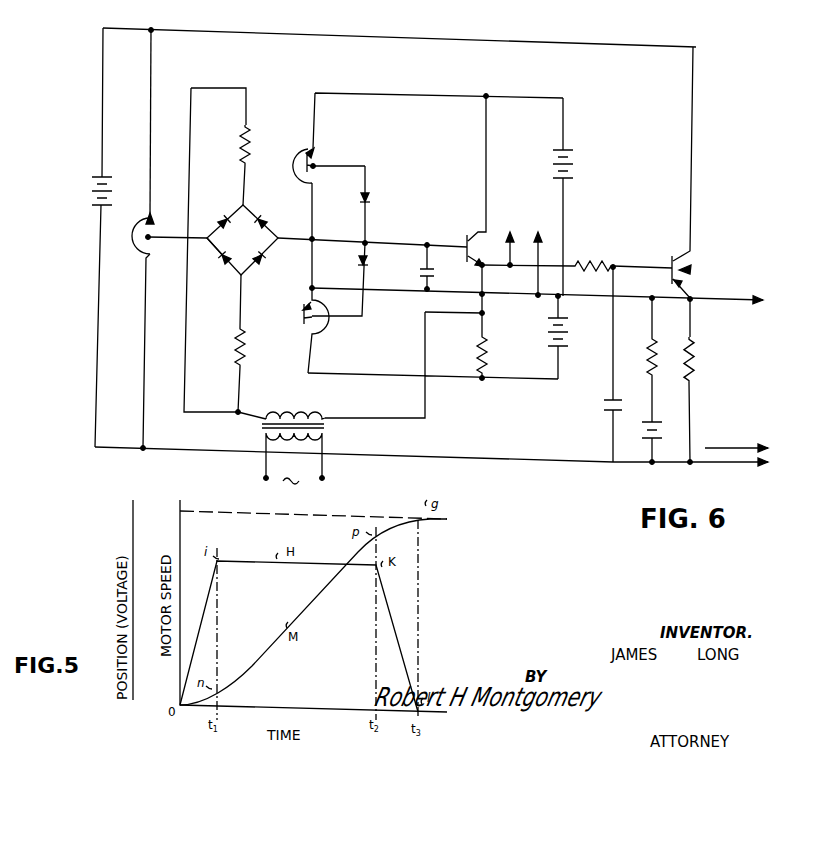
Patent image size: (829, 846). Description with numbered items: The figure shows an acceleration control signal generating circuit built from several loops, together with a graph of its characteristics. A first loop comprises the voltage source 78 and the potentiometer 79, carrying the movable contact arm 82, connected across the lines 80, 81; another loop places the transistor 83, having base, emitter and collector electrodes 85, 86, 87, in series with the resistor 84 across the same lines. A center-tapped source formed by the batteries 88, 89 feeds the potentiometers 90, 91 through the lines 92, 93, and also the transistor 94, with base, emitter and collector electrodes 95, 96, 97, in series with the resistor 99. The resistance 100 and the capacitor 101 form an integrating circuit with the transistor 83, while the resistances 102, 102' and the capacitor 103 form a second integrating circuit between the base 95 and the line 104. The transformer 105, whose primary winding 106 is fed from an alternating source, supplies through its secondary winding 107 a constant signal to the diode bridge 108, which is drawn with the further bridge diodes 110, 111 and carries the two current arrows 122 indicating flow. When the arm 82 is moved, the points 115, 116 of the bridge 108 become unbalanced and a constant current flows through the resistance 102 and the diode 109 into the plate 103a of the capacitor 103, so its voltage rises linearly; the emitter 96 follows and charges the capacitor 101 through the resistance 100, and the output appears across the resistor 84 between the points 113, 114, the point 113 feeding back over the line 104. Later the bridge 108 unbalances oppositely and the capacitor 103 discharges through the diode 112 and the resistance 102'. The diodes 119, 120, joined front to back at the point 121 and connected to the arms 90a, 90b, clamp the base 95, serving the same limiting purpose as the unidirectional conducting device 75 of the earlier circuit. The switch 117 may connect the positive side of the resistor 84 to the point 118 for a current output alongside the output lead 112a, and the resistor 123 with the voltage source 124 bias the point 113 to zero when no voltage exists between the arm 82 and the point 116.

The unidirectional conducting device 75 is at (584, 0).
The voltage source 78 is at (100, 178).
The potentiometer 79 is at (134, 255).
The line 80 is at (225, 27).
The line 81 is at (110, 445).
The movable contact arm 82 is at (150, 221).
The transistor 83 is at (692, 268).
The resistor 84 is at (695, 365).
The base electrode 85 is at (666, 263).
The emitter electrode 86 is at (690, 292).
The collector electrode 87 is at (686, 248).
The battery 88 is at (572, 154).
The battery 89 is at (568, 322).
The potentiometer 90 is at (296, 164).
The contact arm 90a is at (311, 151).
The contact arm 90b is at (302, 300).
The potentiometer 91 is at (293, 337).
The line 92 is at (410, 92).
The line 93 is at (436, 383).
The transistor 94 is at (500, 255).
The base electrode 95 is at (463, 237).
The emitter electrode 96 is at (473, 267).
The collector electrode 97 is at (479, 232).
The resistor 99 is at (486, 357).
The resistance 100 is at (587, 257).
The capacitor 101 is at (602, 406).
The resistance 102 is at (217, 250).
The resistance 102' is at (219, 344).
The capacitor 103 is at (415, 265).
The plate 103a is at (422, 280).
The line 104 is at (513, 296).
The transformer 105 is at (326, 430).
The primary winding 106 is at (260, 440).
The secondary winding 107 is at (313, 420).
The diode bridge 108 is at (257, 250).
The diode 109 is at (263, 218).
The diode 110 is at (223, 218).
The bridge arm 111 is at (216, 271).
The diode 112 is at (263, 265).
The output conductor 112a is at (695, 464).
The point 113 is at (672, 294).
The point 114 is at (688, 464).
The point 115 is at (218, 265).
The point 116 is at (277, 241).
The switch 117 is at (692, 443).
The point 118 is at (706, 449).
The diode 119 is at (361, 194).
The diode 120 is at (357, 262).
The point 121 is at (360, 241).
The current arrows 122 is at (538, 246).
The resistor 123 is at (647, 345).
The voltage source 124 is at (641, 438).